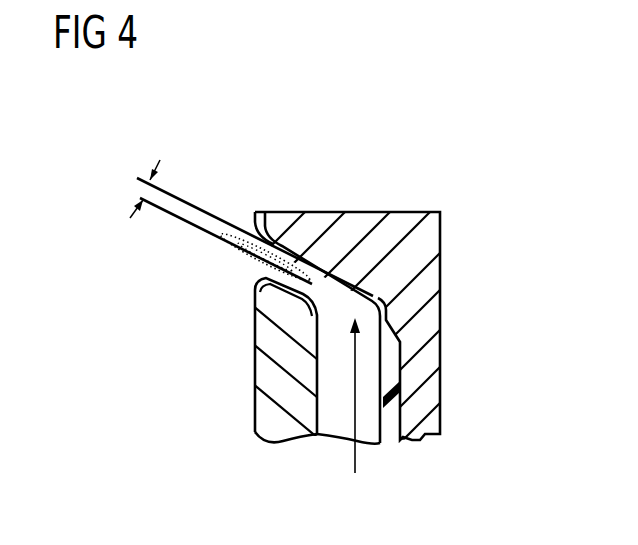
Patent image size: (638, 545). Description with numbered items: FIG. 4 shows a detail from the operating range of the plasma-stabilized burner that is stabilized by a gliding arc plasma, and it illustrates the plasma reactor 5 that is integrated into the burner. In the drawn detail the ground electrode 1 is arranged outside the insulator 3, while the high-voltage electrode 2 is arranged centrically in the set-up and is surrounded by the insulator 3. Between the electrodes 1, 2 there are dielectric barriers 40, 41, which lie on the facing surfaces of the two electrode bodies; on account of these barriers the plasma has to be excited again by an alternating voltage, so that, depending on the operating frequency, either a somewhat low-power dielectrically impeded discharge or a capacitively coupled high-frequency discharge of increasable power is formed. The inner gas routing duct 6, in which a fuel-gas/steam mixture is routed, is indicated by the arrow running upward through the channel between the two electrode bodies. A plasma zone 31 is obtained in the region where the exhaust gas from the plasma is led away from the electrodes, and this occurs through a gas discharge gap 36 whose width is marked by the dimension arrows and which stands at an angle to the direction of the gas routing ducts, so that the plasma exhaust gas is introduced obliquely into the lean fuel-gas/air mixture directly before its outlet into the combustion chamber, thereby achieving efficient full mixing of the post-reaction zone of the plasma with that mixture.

The ground electrode 1 is at (283, 383).
The high-voltage electrode 2 is at (407, 300).
The insulator 3 is at (405, 406).
The plasma reactor 5 is at (267, 104).
The inner gas routing duct 6 is at (355, 455).
The plasma zone 31 is at (224, 240).
The gas discharge gap 36 is at (139, 189).
The dielectric barrier 40 is at (260, 210).
The dielectric barrier 41 is at (262, 280).